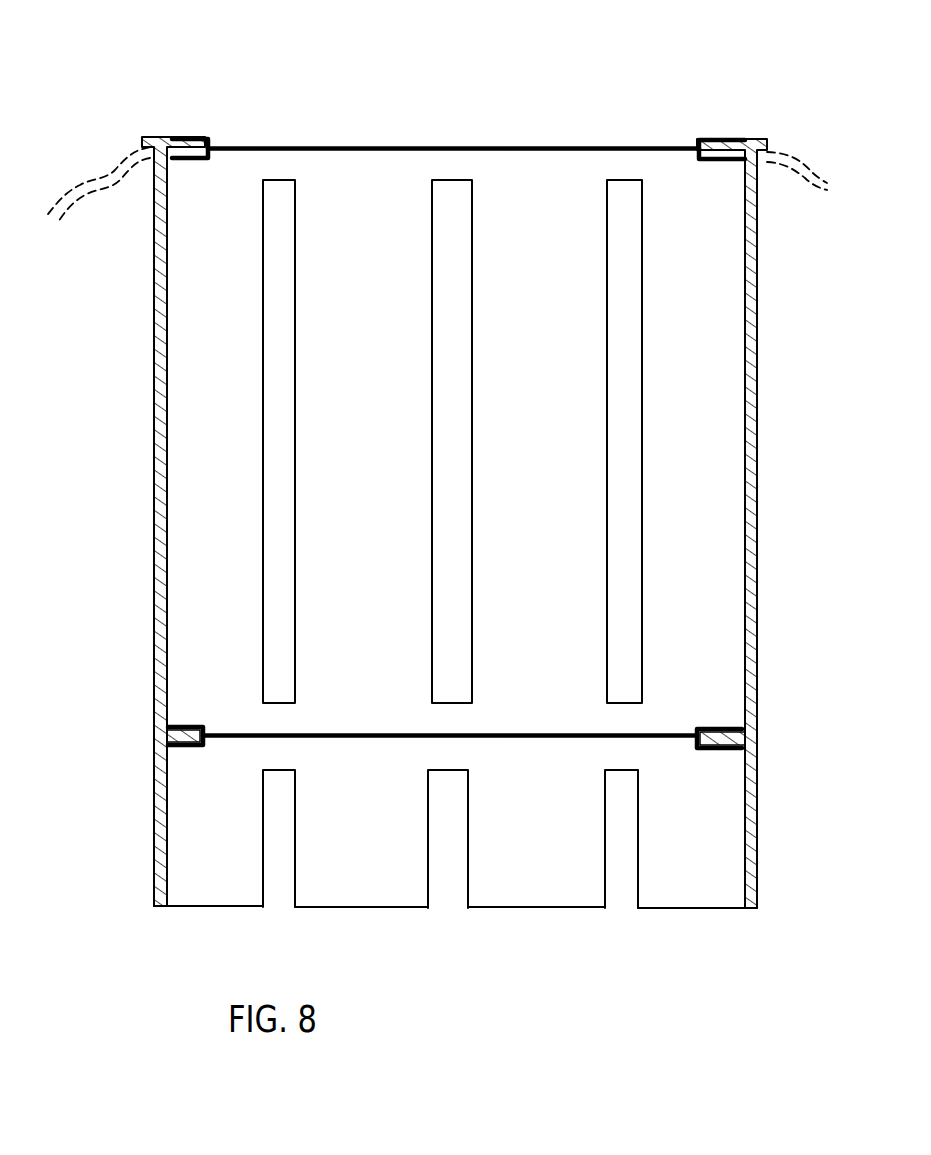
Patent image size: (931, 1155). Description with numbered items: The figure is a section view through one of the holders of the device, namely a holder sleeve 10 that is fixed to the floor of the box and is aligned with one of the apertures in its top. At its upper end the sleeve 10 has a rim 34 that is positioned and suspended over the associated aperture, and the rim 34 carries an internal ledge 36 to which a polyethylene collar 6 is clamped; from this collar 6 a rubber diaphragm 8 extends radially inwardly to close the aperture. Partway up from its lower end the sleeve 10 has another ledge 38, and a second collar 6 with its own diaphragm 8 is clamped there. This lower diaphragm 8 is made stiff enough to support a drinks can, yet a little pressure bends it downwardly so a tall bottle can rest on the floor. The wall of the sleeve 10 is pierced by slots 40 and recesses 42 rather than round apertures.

The collar 6 is at (720, 140).
The diaphragm 8 is at (635, 147).
The holder sleeve 10 is at (155, 370).
The rim 34 is at (760, 140).
The internal ledge 36 is at (197, 140).
The ledge 38 is at (168, 732).
The slots 40 is at (263, 485).
The recesses 42 is at (620, 893).